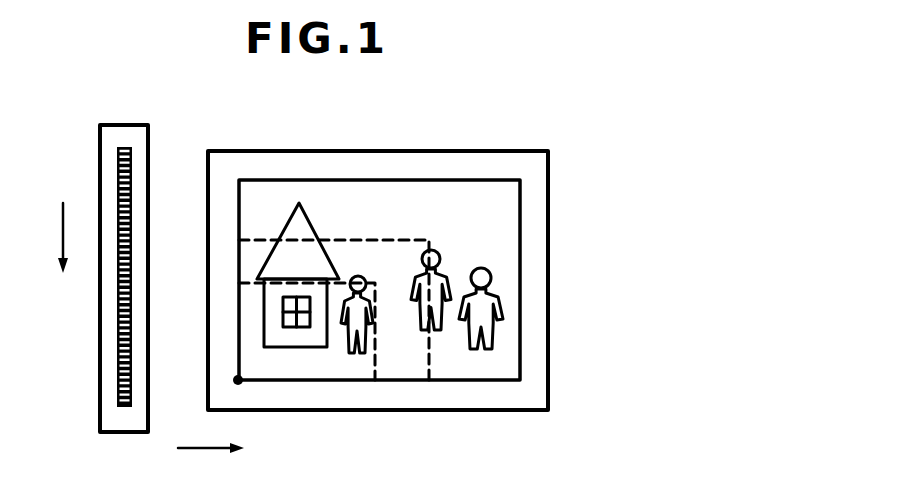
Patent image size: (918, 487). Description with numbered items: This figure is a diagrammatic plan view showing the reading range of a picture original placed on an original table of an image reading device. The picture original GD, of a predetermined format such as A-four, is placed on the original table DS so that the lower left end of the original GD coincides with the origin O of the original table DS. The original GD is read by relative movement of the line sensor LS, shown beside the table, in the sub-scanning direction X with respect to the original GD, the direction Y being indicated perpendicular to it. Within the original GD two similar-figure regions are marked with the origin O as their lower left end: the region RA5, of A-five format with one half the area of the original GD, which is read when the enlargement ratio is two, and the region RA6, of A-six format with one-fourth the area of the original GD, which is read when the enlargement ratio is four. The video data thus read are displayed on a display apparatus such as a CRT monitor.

The line sensor LS is at (128, 140).
The original table DS is at (332, 164).
The picture original GD is at (498, 176).
The region RA5 is at (429, 243).
The region RA6 is at (375, 365).
The origin O is at (241, 385).
The sub-scanning direction X is at (211, 463).
The Y axis Y is at (53, 238).